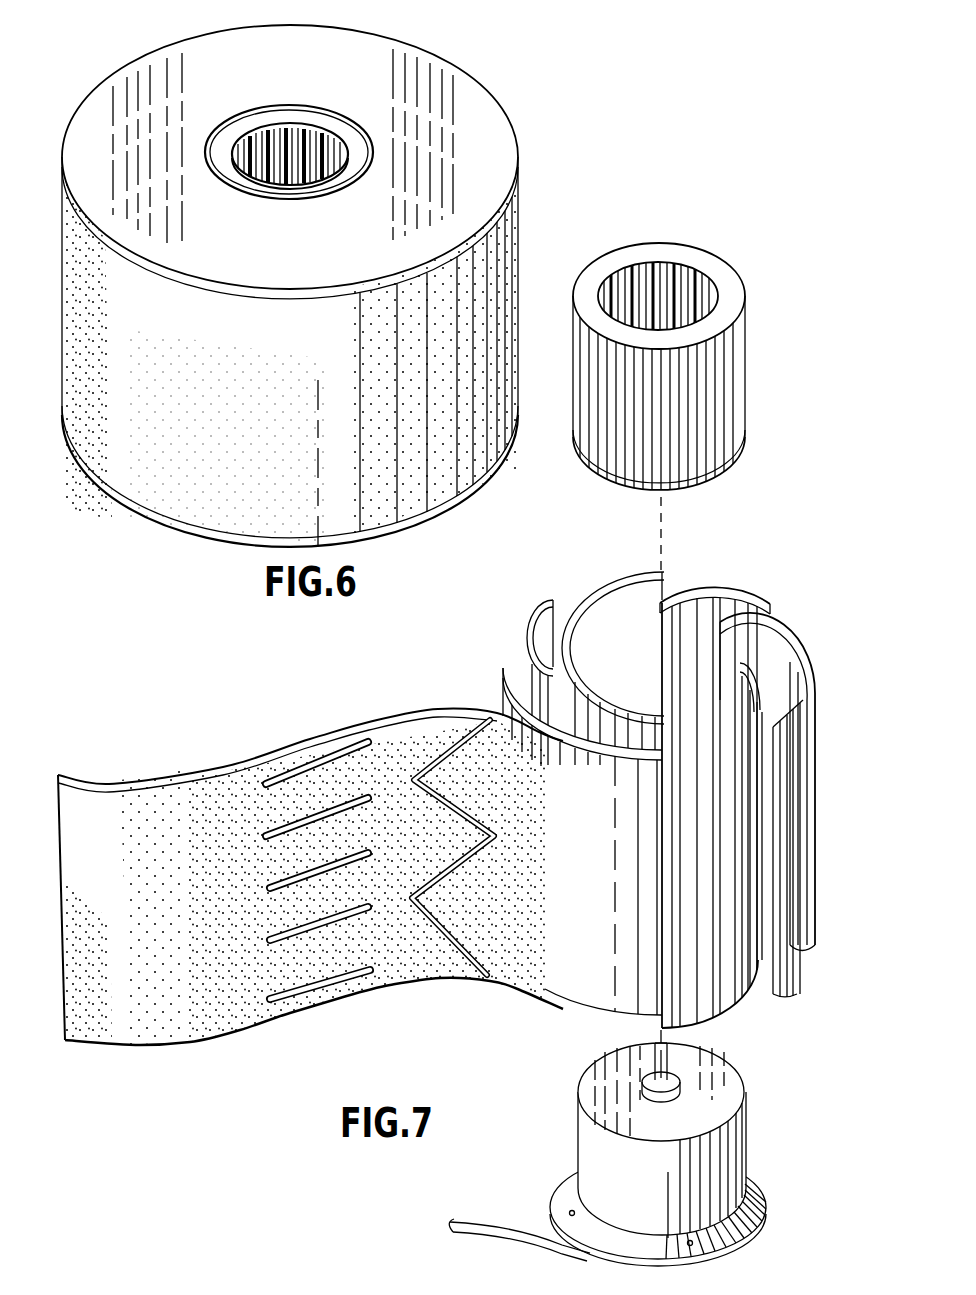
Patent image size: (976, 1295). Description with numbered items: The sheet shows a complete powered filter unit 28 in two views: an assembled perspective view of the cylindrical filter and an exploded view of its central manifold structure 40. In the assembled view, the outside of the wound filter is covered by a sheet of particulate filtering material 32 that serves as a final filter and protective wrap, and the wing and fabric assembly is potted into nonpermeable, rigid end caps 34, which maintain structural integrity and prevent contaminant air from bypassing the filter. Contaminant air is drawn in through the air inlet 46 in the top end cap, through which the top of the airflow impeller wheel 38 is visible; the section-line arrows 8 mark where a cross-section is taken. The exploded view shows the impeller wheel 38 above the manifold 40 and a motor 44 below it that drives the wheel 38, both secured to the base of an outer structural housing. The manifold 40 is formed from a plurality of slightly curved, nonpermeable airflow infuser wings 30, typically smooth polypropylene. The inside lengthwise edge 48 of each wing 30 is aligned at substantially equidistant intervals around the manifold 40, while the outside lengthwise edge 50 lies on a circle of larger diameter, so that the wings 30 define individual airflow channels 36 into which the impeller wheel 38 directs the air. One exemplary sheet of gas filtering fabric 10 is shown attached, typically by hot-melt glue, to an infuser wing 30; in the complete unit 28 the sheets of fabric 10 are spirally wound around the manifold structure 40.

In FIG. 7, the gas filtering fabric 10 is at (253, 980).
In FIG. 6, the powered filter unit 28 is at (337, 273).
In FIG. 7, the airflow infuser wings 30 is at (609, 815).
In FIG. 6, the sheet of particulate filtering material 32 is at (272, 404).
In FIG. 6, the end caps 34 is at (394, 210).
In FIG. 7, the airflow channels 36 is at (773, 687).
In FIG. 6, the airflow impeller wheel 38 is at (313, 130).
In FIG. 7, the airflow impeller wheel 38 is at (725, 415).
In FIG. 7, the central manifold structure 40 is at (695, 630).
In FIG. 7, the motor 44 is at (663, 1177).
In FIG. 6, the air inlet 46 is at (257, 127).
In FIG. 7, the inside lengthwise edge 48 is at (720, 657).
In FIG. 7, the outside lengthwise edge 50 is at (773, 797).
In FIG. 6, the section line 8 is at (90, 403).